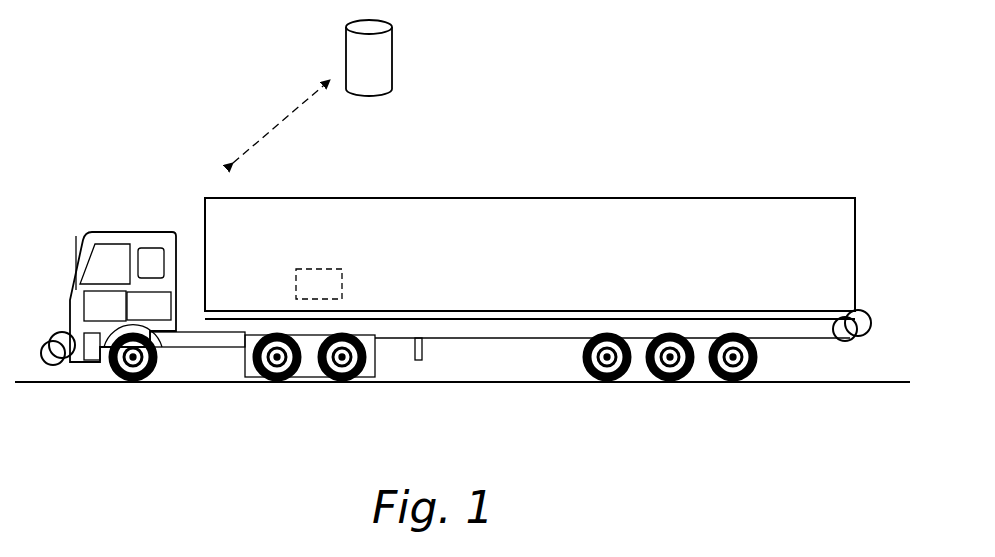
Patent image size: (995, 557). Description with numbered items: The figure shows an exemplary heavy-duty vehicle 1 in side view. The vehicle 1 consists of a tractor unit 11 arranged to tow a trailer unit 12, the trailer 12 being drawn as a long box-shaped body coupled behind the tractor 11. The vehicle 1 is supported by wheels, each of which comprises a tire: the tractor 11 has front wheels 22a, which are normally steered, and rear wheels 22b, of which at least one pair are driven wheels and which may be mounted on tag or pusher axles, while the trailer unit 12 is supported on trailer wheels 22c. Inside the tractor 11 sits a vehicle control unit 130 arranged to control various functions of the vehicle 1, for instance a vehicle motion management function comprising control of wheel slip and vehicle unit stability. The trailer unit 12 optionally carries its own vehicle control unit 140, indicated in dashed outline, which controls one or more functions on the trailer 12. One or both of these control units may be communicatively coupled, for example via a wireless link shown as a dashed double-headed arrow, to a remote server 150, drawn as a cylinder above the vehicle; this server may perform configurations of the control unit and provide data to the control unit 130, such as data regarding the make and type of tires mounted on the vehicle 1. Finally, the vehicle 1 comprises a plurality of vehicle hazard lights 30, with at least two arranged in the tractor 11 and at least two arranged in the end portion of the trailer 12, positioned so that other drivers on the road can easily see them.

The heavy-duty vehicle 1 is at (102, 146).
The tractor unit 11 is at (108, 236).
The trailer unit 12 is at (383, 198).
The front wheels 22a is at (110, 393).
The rear wheels 22b is at (278, 395).
The trailer wheels 22c is at (727, 404).
The vehicle hazard light 30 is at (55, 340).
The vehicle control unit 130 is at (149, 306).
The trailer vehicle control unit 140 is at (319, 284).
The remote server 150 is at (395, 70).